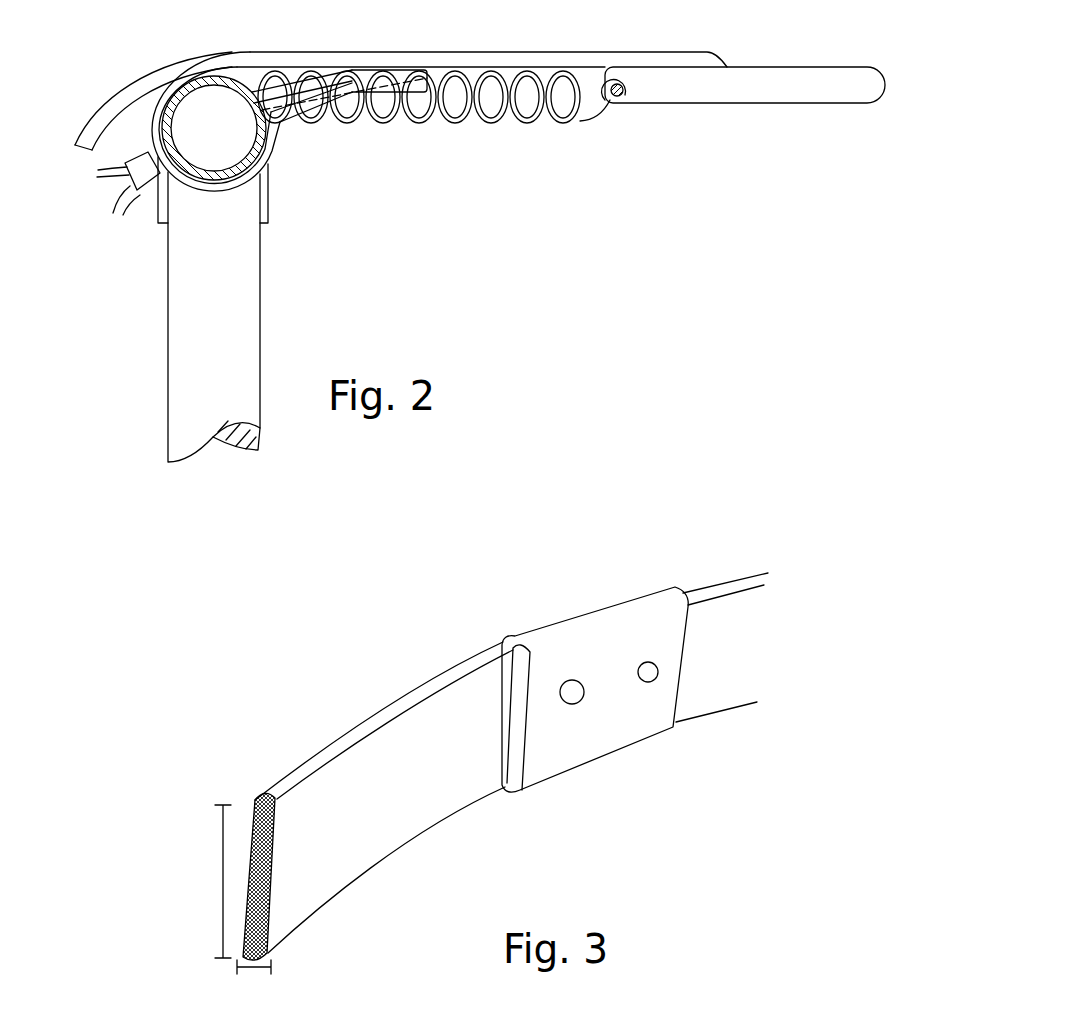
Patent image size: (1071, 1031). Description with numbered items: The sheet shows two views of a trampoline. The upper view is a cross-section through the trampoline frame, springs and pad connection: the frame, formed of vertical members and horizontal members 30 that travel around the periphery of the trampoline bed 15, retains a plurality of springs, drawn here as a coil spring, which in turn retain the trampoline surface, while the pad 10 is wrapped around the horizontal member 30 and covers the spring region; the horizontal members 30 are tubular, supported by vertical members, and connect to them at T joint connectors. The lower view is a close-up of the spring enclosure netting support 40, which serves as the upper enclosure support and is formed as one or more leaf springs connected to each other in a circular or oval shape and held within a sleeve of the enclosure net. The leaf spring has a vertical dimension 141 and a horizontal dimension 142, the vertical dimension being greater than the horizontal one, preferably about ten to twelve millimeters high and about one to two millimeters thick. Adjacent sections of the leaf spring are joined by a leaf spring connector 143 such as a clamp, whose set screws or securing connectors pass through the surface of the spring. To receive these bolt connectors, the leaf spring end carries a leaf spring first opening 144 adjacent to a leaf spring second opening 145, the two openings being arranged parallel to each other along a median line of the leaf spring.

In FIG. 2, the pad 10 is at (110, 93).
In FIG. 2, the bed 15 is at (784, 65).
In FIG. 2, the horizontal member 30 is at (183, 100).
In FIG. 3, the spring enclosure netting support 40 is at (254, 806).
In FIG. 3, the vertical dimension 141 is at (155, 881).
In FIG. 3, the horizontal dimension 142 is at (332, 988).
In FIG. 3, the leaf spring connector 143 is at (540, 763).
In FIG. 3, the leaf spring first opening 144 is at (574, 694).
In FIG. 3, the leaf spring second opening 145 is at (648, 674).